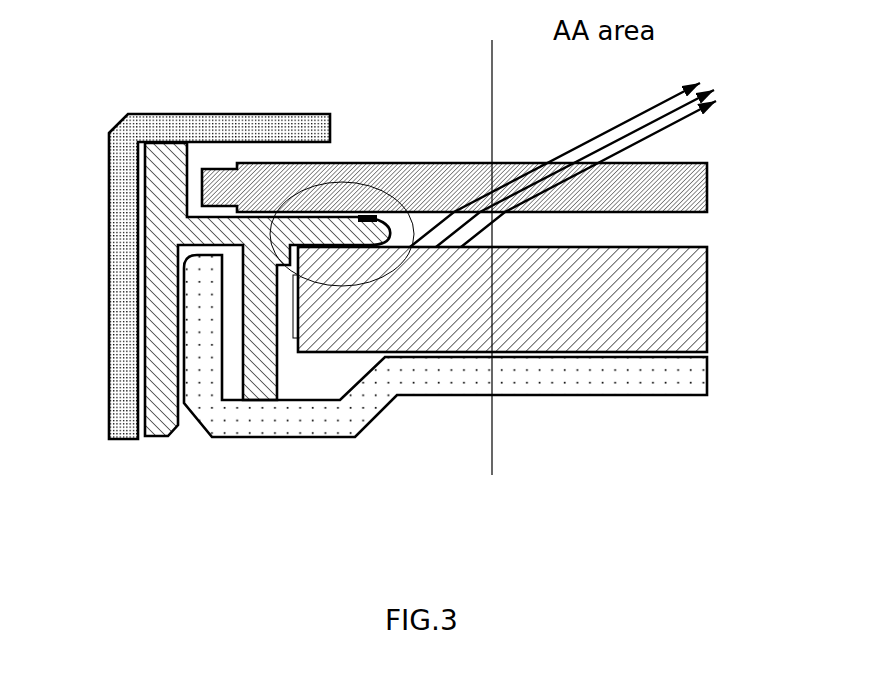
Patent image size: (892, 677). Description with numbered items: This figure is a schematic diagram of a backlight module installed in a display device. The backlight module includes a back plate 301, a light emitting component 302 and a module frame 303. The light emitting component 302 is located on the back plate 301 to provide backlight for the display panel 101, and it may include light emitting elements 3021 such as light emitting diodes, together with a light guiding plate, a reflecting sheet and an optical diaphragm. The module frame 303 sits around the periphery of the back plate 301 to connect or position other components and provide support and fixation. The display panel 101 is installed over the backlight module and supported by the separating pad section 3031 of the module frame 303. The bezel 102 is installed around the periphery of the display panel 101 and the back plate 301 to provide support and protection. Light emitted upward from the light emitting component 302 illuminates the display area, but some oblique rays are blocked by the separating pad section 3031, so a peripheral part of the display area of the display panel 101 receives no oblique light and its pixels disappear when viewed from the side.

The display panel 101 is at (682, 178).
The bezel 102 is at (118, 117).
The back plate 301 is at (412, 382).
The light emitting component 302 is at (690, 303).
The module frame 303 is at (167, 433).
The light emitting elements 3021 is at (310, 245).
The separating pad section 3031 is at (347, 185).